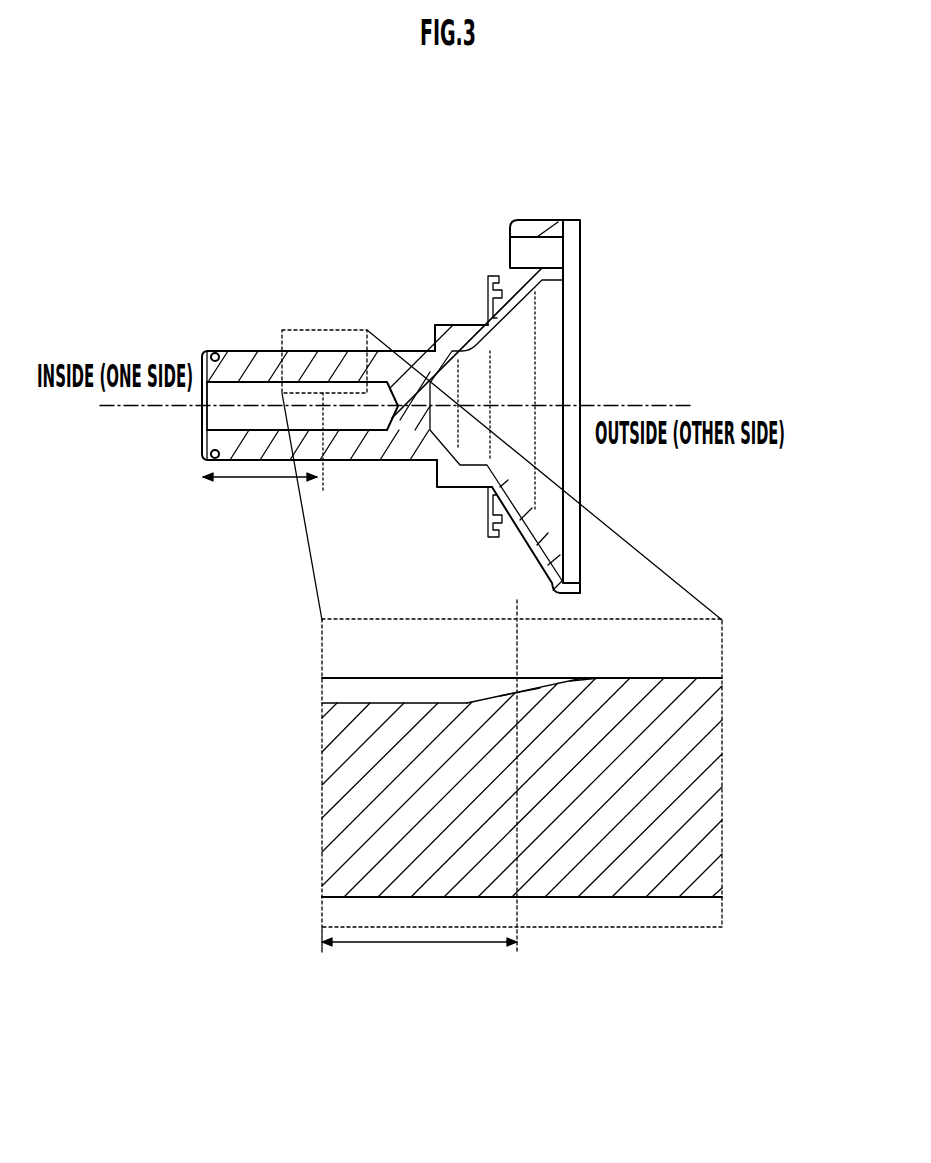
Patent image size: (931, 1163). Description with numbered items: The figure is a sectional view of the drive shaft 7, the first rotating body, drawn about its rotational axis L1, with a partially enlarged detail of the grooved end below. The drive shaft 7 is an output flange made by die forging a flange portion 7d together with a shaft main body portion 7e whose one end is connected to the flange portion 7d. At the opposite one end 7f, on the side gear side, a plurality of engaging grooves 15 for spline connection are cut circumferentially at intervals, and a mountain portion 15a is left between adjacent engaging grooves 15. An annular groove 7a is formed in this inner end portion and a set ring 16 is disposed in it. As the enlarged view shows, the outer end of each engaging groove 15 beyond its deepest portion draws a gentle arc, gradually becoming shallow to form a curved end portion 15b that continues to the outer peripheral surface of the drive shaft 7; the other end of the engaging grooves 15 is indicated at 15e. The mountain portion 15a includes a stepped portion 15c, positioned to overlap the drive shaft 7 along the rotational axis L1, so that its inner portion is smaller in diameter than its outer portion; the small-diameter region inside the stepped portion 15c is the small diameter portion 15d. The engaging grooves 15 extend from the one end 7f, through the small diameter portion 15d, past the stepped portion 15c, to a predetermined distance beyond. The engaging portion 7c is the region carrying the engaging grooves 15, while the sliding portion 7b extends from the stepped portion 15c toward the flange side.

The drive shaft 7 is at (437, 322).
The annular groove 7a is at (203, 465).
The sliding portion 7b is at (353, 348).
The engaging portion 7c is at (212, 348).
The flange portion 7d is at (548, 218).
The shaft main body portion 7e is at (400, 340).
The one end 7f is at (203, 432).
The engaging groove 15 is at (223, 348).
The mountain portion 15a is at (260, 348).
The curved end portion 15b is at (500, 690).
The stepped portion 15c is at (519, 690).
The small diameter portion 15d is at (360, 689).
The other end of the engaging grooves 15e is at (583, 677).
The set ring 16 is at (210, 352).
The rotational axis L1 is at (621, 402).